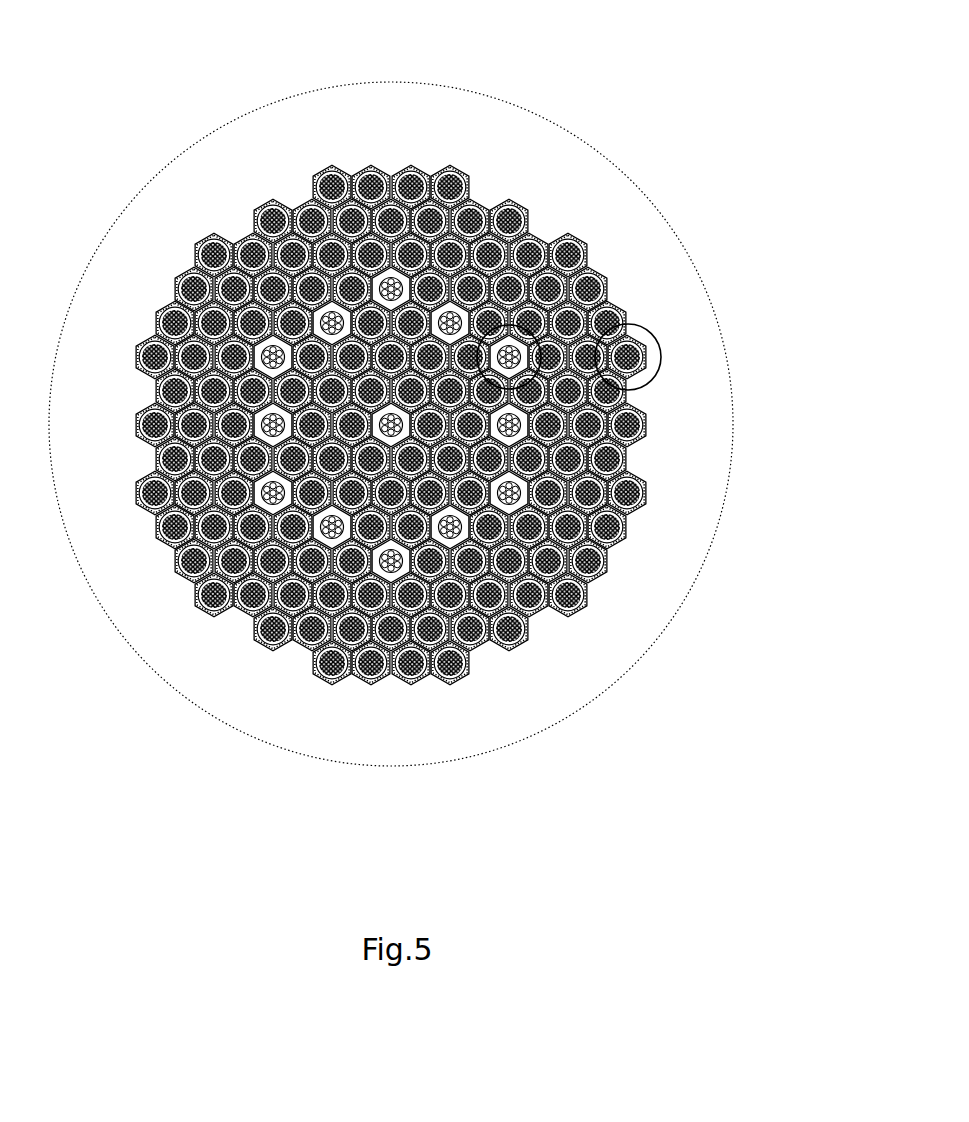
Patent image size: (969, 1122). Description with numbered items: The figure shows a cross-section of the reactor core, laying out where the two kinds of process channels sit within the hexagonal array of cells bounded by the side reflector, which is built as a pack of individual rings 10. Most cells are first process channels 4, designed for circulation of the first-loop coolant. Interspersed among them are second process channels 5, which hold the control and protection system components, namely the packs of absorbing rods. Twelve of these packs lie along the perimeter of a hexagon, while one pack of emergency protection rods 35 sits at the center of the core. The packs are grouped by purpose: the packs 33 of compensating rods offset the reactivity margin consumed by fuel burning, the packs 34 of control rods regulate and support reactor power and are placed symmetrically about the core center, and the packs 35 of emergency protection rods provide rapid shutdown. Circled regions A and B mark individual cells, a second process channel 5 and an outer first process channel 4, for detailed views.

The first process channel 4 is at (617, 533).
The second process channel 5 is at (522, 423).
The ring 10 is at (650, 625).
The pack of compensating rods 33 is at (506, 347).
The pack of control rods 34 is at (388, 285).
The pack of emergency protection rods 35 is at (266, 430).
The detail A is at (564, 225).
The detail B is at (690, 272).